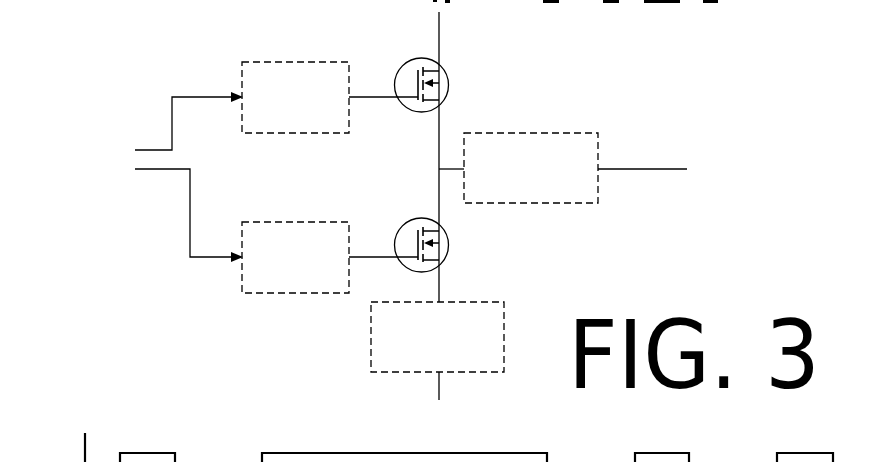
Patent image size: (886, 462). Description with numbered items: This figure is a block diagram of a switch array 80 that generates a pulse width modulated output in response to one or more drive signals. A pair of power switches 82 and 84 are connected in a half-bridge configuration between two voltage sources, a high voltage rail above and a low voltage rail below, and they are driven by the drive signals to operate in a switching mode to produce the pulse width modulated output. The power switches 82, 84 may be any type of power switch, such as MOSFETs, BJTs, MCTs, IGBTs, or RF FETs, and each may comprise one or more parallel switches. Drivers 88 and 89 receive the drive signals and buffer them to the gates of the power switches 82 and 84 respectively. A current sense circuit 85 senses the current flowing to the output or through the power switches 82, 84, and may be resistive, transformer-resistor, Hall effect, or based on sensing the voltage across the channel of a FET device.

The switch array 80 is at (200, 25).
The power switch 82 is at (448, 80).
The power switch 84 is at (448, 238).
The current sense circuit 85 is at (532, 133).
The driver 88 is at (296, 62).
The driver 89 is at (296, 222).